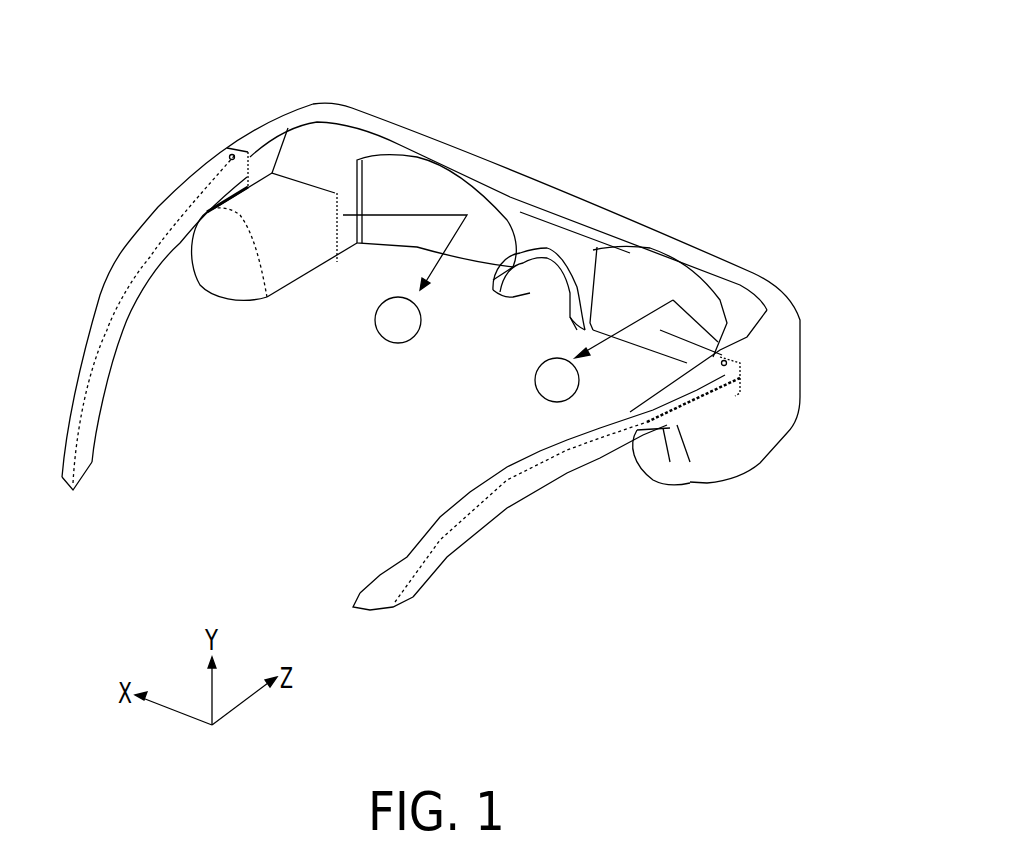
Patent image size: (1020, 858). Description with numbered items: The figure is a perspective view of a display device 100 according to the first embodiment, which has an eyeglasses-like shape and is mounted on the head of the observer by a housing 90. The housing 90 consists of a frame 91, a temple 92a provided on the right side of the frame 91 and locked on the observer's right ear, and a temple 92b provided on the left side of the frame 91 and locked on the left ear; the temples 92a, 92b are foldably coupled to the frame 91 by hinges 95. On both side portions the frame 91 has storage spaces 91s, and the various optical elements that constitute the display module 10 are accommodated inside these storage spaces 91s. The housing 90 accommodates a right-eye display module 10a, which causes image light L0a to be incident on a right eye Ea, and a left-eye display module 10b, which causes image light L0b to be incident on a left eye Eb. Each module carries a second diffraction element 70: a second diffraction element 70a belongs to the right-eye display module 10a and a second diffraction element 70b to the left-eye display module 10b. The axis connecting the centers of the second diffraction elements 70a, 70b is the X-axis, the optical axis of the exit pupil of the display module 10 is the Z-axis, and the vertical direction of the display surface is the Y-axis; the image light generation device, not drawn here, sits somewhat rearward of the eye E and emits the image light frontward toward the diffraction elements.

The display device 100 is at (646, 91).
The housing 90 is at (153, 211).
The frame 91 is at (545, 187).
The temple 92a is at (667, 480).
The temple 92b is at (200, 128).
The hinge 95 is at (234, 150).
The storage space 91s is at (205, 285).
The display module 10 is at (283, 245).
The right-eye display module 10a is at (620, 380).
The left-eye display module 10b is at (337, 275).
The second diffraction element 70 is at (445, 158).
The second diffraction element 70a is at (670, 268).
The second diffraction element 70b is at (446, 177).
The image light L0a is at (624, 320).
The image light L0b is at (405, 237).
The eye E is at (370, 367).
The right eye Ea is at (533, 383).
The left eye Eb is at (392, 330).